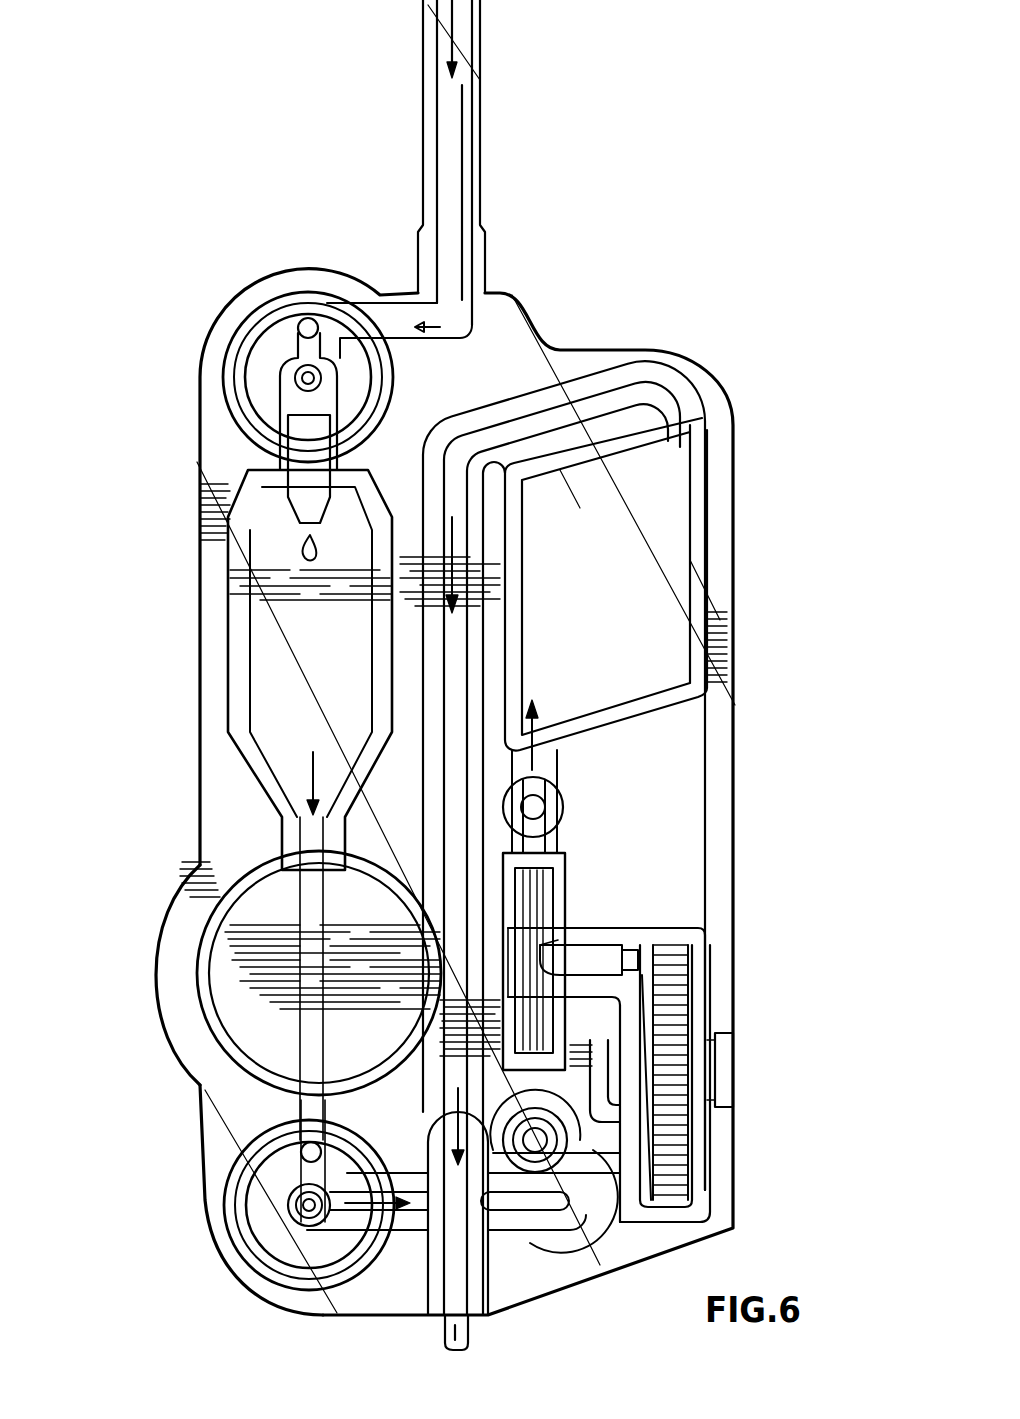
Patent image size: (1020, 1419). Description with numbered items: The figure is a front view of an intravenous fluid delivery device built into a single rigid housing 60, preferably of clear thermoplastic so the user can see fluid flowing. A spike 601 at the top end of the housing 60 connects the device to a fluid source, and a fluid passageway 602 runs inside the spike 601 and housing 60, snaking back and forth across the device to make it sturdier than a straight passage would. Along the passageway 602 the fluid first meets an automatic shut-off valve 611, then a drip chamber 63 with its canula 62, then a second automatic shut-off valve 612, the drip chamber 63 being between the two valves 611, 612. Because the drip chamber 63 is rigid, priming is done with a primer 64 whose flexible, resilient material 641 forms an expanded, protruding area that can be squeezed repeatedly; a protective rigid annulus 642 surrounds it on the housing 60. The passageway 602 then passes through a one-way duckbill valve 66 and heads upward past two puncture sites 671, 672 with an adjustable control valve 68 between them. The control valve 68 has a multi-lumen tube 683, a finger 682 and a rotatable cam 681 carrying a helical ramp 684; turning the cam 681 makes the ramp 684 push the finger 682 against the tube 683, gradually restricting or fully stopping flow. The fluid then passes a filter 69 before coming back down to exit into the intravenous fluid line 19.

The housing 60 is at (205, 1278).
The spike 601 is at (468, 178).
The fluid passageway 602 is at (612, 395).
The automatic shut-off valve 611 is at (285, 355).
The automatic shut-off valve 612 is at (265, 1205).
The drip chamber's canula 62 is at (300, 478).
The drip chamber 63 is at (250, 597).
The primer 64 is at (160, 1050).
The flexible, resilient material 641 is at (235, 957).
The protective rigid annulus 642 is at (200, 873).
The filter 69 is at (665, 598).
The puncture site 672 is at (548, 803).
The multi-lumen tube 683 is at (535, 893).
The finger 682 is at (597, 947).
The helical ramp 684 is at (648, 975).
The cam 681 is at (690, 1000).
The adjustable control valve 68 is at (735, 1077).
The puncture site 671 is at (585, 1148).
The one-way valve 66 is at (618, 1262).
The intravenous fluid line 19 is at (470, 1328).